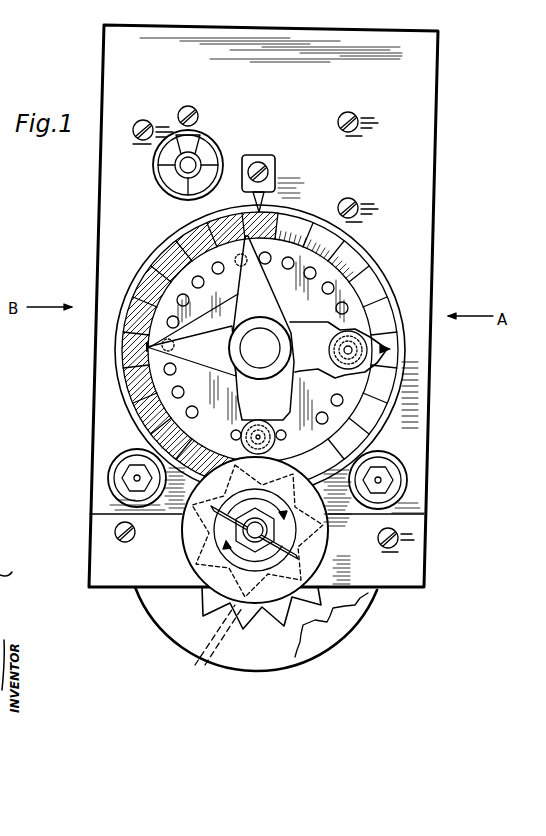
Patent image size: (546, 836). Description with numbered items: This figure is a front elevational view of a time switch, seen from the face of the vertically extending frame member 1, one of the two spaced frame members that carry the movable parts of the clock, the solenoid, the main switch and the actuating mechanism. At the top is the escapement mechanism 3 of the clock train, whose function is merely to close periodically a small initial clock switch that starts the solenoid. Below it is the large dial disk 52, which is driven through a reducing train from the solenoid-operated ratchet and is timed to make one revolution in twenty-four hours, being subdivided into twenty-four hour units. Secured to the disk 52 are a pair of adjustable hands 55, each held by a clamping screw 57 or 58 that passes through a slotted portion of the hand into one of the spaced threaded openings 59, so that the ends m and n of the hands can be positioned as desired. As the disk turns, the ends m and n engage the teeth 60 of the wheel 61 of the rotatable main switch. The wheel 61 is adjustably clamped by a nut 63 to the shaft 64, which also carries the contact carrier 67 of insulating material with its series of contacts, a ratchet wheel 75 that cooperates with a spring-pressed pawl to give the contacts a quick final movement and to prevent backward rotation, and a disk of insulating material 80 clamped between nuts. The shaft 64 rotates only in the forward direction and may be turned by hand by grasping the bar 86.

The frame member 1 is at (428, 231).
The escapement mechanism 3 is at (203, 157).
The end of hand n is at (288, 230).
The disk 52 is at (360, 292).
The hands 55 is at (160, 369).
The end of hand m is at (148, 347).
The clamping screw 57 is at (390, 348).
The clamping screw 58 is at (259, 422).
The threaded openings 59 is at (321, 410).
The bar 86 is at (92, 514).
The wheel 61 is at (357, 583).
The nut 63 is at (237, 534).
The shaft 64 is at (238, 541).
The teeth 60 is at (216, 649).
The ratchet wheel 75 is at (281, 615).
The disk of insulating material 80 is at (258, 657).
The contact carrier 67 is at (329, 640).